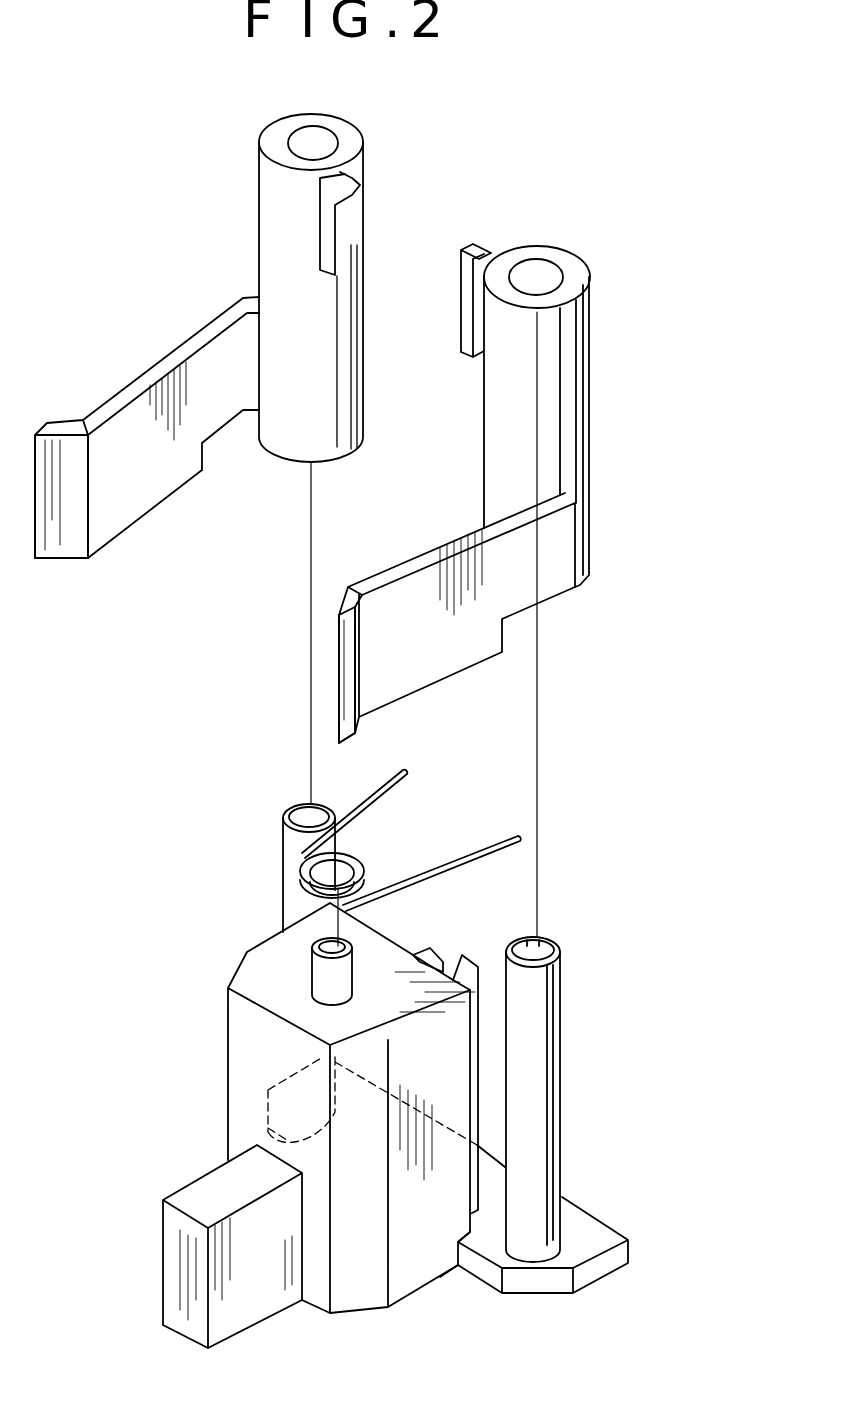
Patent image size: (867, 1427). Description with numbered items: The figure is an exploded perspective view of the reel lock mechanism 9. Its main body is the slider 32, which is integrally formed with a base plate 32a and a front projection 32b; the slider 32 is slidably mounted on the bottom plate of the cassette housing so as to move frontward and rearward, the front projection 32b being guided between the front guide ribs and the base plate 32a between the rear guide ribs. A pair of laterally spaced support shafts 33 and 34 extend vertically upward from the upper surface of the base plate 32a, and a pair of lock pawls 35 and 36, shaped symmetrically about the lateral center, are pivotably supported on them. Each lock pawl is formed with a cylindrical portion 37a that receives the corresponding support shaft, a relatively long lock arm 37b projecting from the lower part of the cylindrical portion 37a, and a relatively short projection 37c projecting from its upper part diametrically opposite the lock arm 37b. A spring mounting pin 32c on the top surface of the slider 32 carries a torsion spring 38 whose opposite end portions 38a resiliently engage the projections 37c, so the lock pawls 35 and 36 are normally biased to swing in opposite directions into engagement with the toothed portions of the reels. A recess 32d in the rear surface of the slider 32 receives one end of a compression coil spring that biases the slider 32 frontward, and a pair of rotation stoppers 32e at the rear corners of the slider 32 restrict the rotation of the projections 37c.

The reel lock mechanism 9 is at (206, 733).
The slider 32 is at (238, 1055).
The base plate 32a is at (590, 1228).
The front projection 32b is at (168, 1236).
The spring mounting pin 32c is at (315, 968).
The recess 32d is at (533, 937).
The rotation stopper 32e is at (382, 902).
The support shaft 33 is at (550, 1120).
The support shaft 34 is at (285, 850).
The lock pawl 35 is at (533, 582).
The lock pawl 36 is at (147, 367).
The cylindrical portion 37a is at (263, 190).
The lock arm 37b is at (61, 543).
The projection 37c is at (463, 297).
The torsion spring 38 is at (461, 830).
The end portion 38a is at (450, 877).